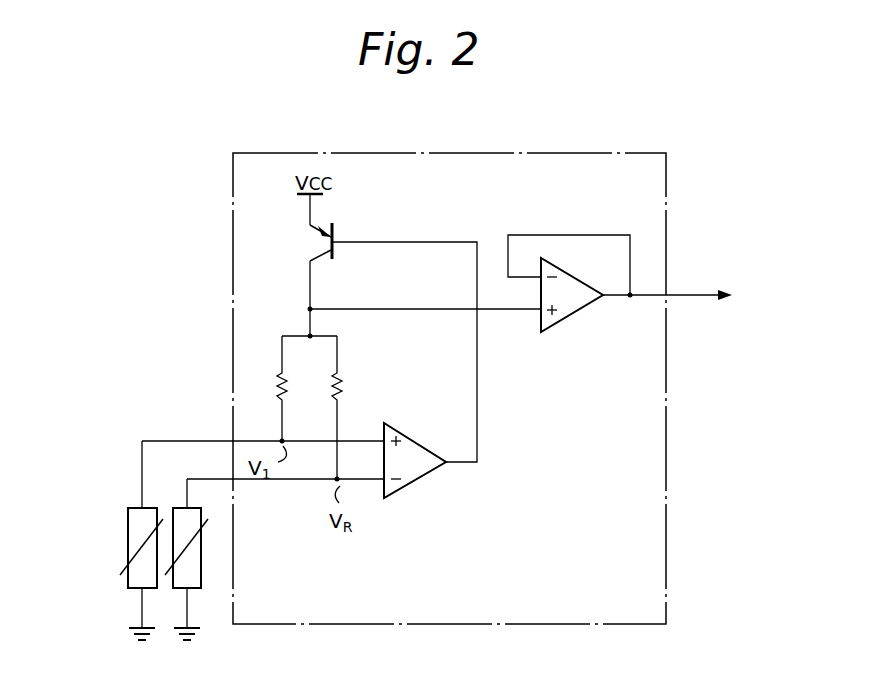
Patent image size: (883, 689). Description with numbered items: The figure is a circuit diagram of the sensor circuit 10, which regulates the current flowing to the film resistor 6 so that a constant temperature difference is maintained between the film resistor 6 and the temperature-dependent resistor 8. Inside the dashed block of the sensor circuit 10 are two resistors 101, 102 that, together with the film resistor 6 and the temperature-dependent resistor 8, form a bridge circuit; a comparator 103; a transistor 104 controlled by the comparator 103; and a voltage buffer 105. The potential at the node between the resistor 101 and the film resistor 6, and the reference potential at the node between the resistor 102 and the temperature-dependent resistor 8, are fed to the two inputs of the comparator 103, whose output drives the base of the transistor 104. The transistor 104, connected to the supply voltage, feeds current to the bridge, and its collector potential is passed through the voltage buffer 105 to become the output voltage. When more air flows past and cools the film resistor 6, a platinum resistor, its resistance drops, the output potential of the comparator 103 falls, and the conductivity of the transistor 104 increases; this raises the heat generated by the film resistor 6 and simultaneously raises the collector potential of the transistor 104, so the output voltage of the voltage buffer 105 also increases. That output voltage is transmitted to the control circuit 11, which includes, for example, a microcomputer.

The sensor circuit 10 is at (598, 153).
The film resistor 6 is at (128, 548).
The temperature-dependent resistor 8 is at (202, 548).
The resistor 101 is at (290, 382).
The resistor 102 is at (340, 388).
The comparator 103 is at (418, 443).
The transistor 104 is at (318, 245).
The voltage buffer 105 is at (572, 318).
The control circuit 11 is at (736, 311).